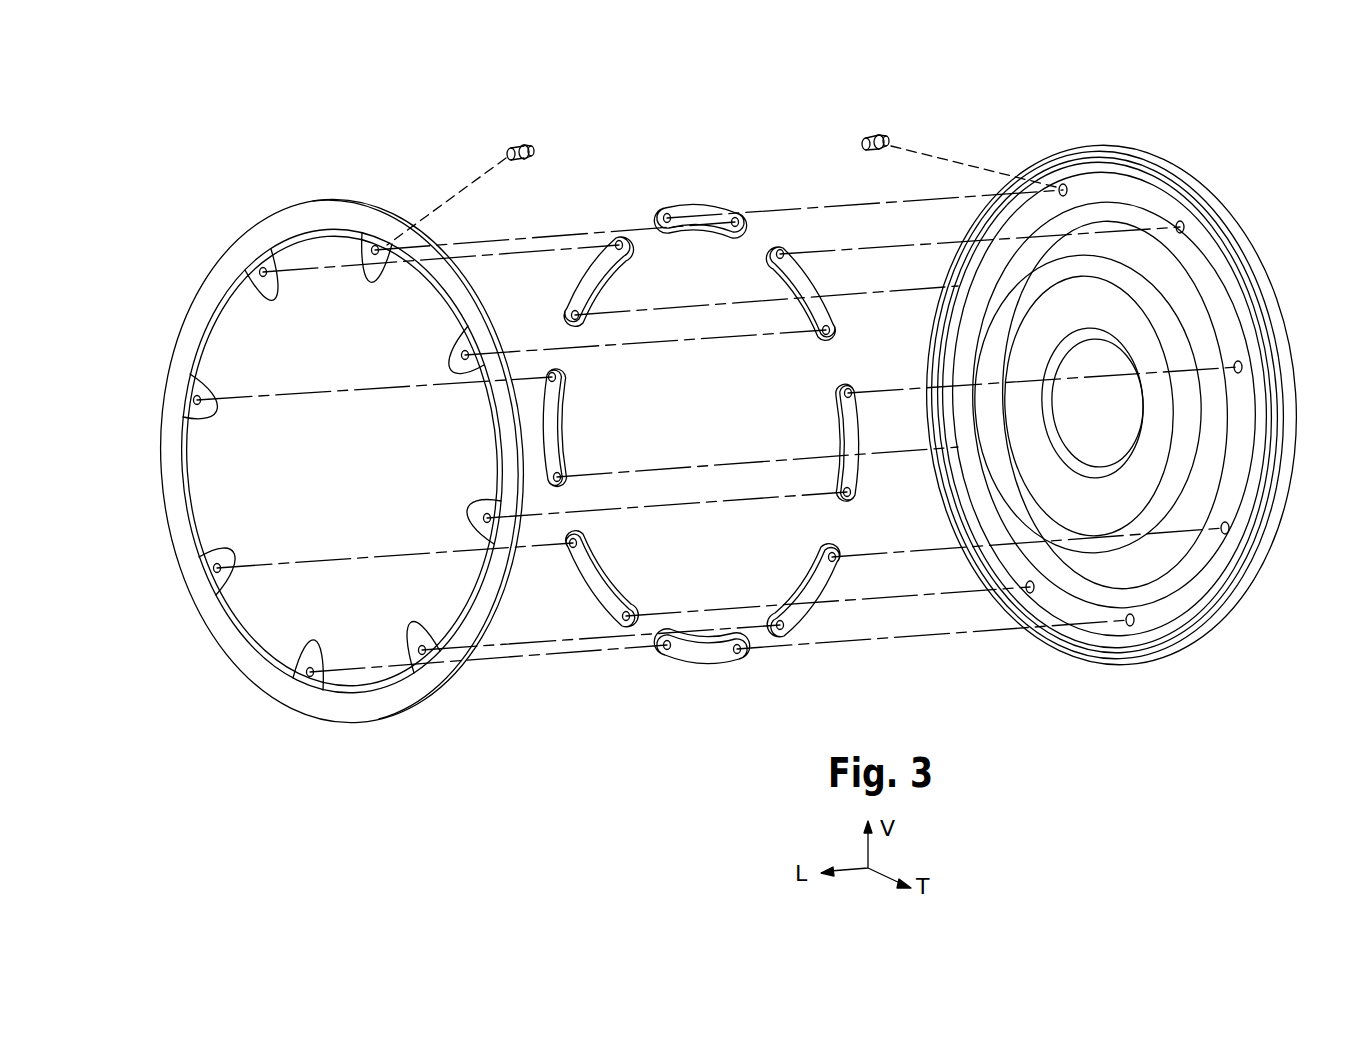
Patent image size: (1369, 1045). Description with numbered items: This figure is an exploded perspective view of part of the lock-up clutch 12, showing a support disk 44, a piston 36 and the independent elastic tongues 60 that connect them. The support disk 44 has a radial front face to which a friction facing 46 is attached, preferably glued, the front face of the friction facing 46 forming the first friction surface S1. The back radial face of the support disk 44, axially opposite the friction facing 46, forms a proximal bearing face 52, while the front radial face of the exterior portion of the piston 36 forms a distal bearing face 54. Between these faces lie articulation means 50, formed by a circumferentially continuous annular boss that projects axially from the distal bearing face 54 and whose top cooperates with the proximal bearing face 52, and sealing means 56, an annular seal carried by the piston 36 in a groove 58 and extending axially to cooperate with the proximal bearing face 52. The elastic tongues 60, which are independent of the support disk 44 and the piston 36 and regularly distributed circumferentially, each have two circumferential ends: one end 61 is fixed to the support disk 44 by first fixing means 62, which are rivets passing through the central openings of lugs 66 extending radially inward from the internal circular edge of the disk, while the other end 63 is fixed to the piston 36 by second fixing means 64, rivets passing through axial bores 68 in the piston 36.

The lock-up clutch 12 is at (660, 92).
The piston 36 is at (1216, 307).
The support disk 44 is at (437, 240).
The friction facing 46 is at (256, 240).
The articulation means 50 is at (1173, 198).
The proximal bearing face 52 is at (452, 686).
The distal bearing face 54 is at (1176, 595).
The sealing means 56 is at (1270, 453).
The groove 58 is at (1272, 423).
The elastic tongues 60 is at (696, 214).
The circumferential end 61 is at (658, 220).
The first fixing means 62 is at (521, 147).
The circumferential end 63 is at (733, 222).
The second fixing means 64 is at (878, 136).
The lugs 66 is at (460, 360).
The axial bores 68 is at (1062, 186).
The first friction surface S1 is at (182, 340).